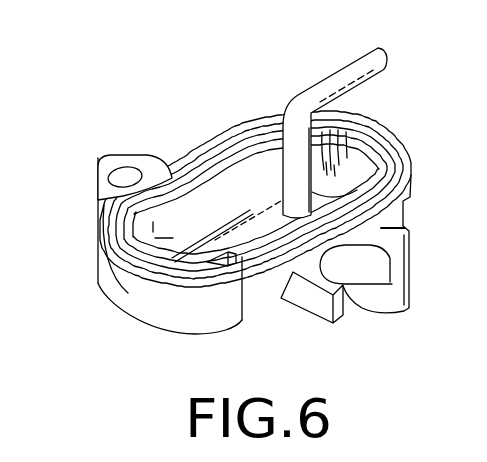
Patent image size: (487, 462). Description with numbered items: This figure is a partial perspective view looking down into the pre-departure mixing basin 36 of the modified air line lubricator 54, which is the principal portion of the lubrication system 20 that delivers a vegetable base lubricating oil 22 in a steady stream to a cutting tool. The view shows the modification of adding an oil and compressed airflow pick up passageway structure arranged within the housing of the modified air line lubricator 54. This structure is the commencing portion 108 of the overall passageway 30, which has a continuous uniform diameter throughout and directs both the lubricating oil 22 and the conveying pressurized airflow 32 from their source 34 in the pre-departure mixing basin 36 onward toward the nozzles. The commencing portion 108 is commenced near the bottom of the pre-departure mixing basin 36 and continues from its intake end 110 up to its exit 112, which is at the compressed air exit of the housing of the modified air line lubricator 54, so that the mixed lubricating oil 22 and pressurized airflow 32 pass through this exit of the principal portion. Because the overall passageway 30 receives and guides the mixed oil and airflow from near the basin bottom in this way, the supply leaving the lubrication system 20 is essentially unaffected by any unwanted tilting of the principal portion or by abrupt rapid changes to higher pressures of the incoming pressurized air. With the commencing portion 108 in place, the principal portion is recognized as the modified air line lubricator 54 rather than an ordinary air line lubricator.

The lubrication system 20 is at (85, 242).
The lubricating oil 22 is at (145, 240).
The overall passageway 30 is at (349, 56).
The pressurized airflow 32 is at (125, 212).
The source 34 is at (291, 271).
The pre-departure mixing basin 36 is at (140, 326).
The modified air line lubricator 54 is at (247, 120).
The commencing portion 108 is at (311, 163).
The intake end 110 is at (387, 189).
The exit 112 is at (386, 70).